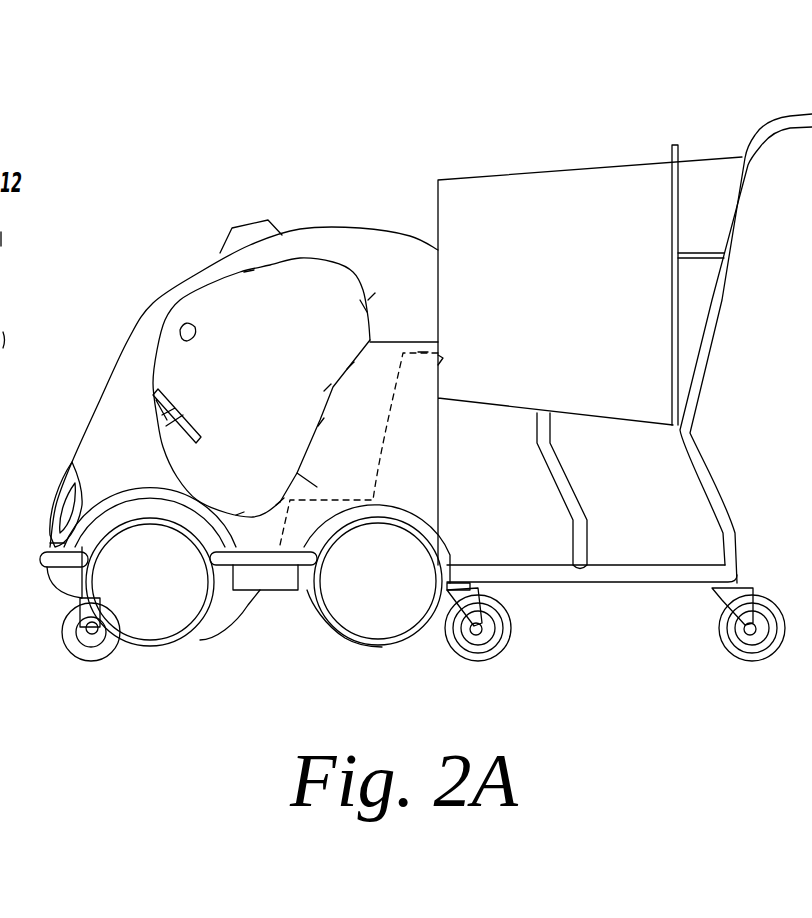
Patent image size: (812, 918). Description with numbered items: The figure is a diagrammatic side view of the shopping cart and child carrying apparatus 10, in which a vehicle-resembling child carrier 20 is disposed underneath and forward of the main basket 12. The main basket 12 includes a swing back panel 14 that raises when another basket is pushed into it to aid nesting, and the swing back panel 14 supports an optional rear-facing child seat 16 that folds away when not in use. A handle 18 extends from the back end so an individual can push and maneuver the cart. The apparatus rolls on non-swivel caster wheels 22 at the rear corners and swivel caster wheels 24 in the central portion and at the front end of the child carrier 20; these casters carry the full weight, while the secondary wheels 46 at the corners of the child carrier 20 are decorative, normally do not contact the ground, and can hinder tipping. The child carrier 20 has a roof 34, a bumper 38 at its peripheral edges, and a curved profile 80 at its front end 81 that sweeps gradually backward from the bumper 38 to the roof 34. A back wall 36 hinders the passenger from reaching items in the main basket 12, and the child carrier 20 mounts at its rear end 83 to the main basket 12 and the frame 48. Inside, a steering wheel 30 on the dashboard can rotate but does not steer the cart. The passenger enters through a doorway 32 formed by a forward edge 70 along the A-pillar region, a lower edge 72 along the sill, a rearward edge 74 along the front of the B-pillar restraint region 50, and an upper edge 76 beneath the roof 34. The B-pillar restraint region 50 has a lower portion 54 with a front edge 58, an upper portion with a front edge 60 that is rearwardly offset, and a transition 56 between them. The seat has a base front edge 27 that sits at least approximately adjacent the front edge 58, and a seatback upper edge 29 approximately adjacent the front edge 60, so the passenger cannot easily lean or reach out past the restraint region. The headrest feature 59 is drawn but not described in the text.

The shopping cart and child carrying apparatus 10 is at (376, 150).
The main basket 12 is at (543, 190).
The swing back panel 14 is at (673, 183).
The rear-facing child seat 16 is at (700, 256).
The handle 18 is at (792, 118).
The child carrier 20 is at (201, 273).
The non-swivel caster wheels 22 is at (737, 657).
The swivel caster wheels 24 is at (90, 650).
The front edge of the seat base 27 is at (280, 500).
The upper edge of the seatback 29 is at (423, 350).
The steering wheel 30 is at (184, 418).
The doorway 32 is at (240, 331).
The roof 34 is at (297, 247).
The back wall 36 is at (440, 360).
The bumper 38 is at (40, 560).
The secondary wheels 46 is at (152, 598).
The frame 48 is at (672, 573).
The B-pillar restraint region 50 is at (370, 434).
The lower portion of the B-pillar restraint region 54 is at (297, 473).
The transition 56 is at (350, 366).
The front edge of the lower portion 58 is at (320, 423).
The headrest top 59 is at (373, 297).
The front edge of the upper portion 60 is at (362, 307).
The forward edge of the doorway 70 is at (183, 325).
The lower edge of the doorway 72 is at (240, 512).
The rearward edge of the doorway 74 is at (327, 388).
The upper edge of the doorway 76 is at (249, 275).
The curved profile 80 is at (104, 351).
The front end 81 is at (53, 448).
The rear end 83 is at (458, 470).